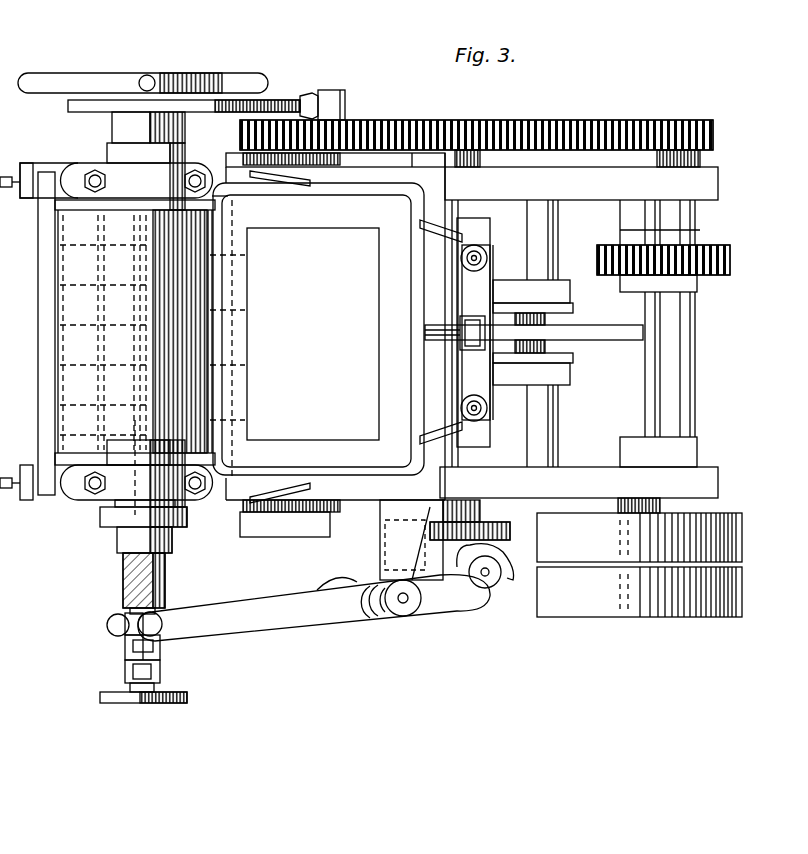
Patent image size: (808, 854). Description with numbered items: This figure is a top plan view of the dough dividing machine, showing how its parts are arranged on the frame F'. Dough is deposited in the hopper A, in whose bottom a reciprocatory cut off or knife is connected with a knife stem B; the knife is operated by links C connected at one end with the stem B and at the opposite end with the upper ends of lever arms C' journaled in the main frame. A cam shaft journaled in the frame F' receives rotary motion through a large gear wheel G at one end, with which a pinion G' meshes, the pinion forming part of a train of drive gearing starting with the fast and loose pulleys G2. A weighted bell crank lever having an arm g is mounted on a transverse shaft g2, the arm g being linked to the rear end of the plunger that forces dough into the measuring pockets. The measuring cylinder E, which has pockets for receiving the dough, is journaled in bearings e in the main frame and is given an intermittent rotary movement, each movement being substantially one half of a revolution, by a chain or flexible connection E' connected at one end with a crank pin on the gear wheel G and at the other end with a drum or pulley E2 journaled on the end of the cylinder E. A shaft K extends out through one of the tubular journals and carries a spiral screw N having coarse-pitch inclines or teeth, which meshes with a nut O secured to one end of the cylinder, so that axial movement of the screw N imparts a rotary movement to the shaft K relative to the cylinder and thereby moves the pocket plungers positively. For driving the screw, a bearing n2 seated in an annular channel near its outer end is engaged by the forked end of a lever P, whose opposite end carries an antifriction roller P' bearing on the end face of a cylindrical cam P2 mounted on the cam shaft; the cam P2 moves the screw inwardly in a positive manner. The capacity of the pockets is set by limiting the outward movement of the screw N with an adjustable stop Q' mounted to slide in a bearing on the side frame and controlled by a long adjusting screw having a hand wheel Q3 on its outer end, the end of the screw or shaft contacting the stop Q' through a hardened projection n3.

The measuring cylinder E is at (134, 294).
The chain or flexible connection E' is at (311, 88).
The drum or pulley E2 is at (67, 113).
The bearings e is at (160, 505).
The frame F' is at (359, 345).
The hopper A is at (381, 358).
The links C is at (403, 332).
The lever arms C' is at (321, 316).
The gear wheel G is at (476, 128).
The pinion G' is at (663, 277).
The fast and loose pulleys G2 is at (741, 540).
The knife stem B is at (610, 334).
The arm g is at (573, 320).
The transverse shaft g2 is at (556, 432).
The lever P is at (314, 622).
The antifriction roller P' is at (447, 555).
The cylindrical cam P2 is at (427, 565).
The shaft K is at (173, 530).
The nut O is at (118, 545).
The spiral screw N is at (123, 582).
The bearing n2 is at (167, 612).
The hardened projection n3 is at (127, 655).
The adjustable stop Q' is at (114, 676).
The hand wheel Q3 is at (177, 702).